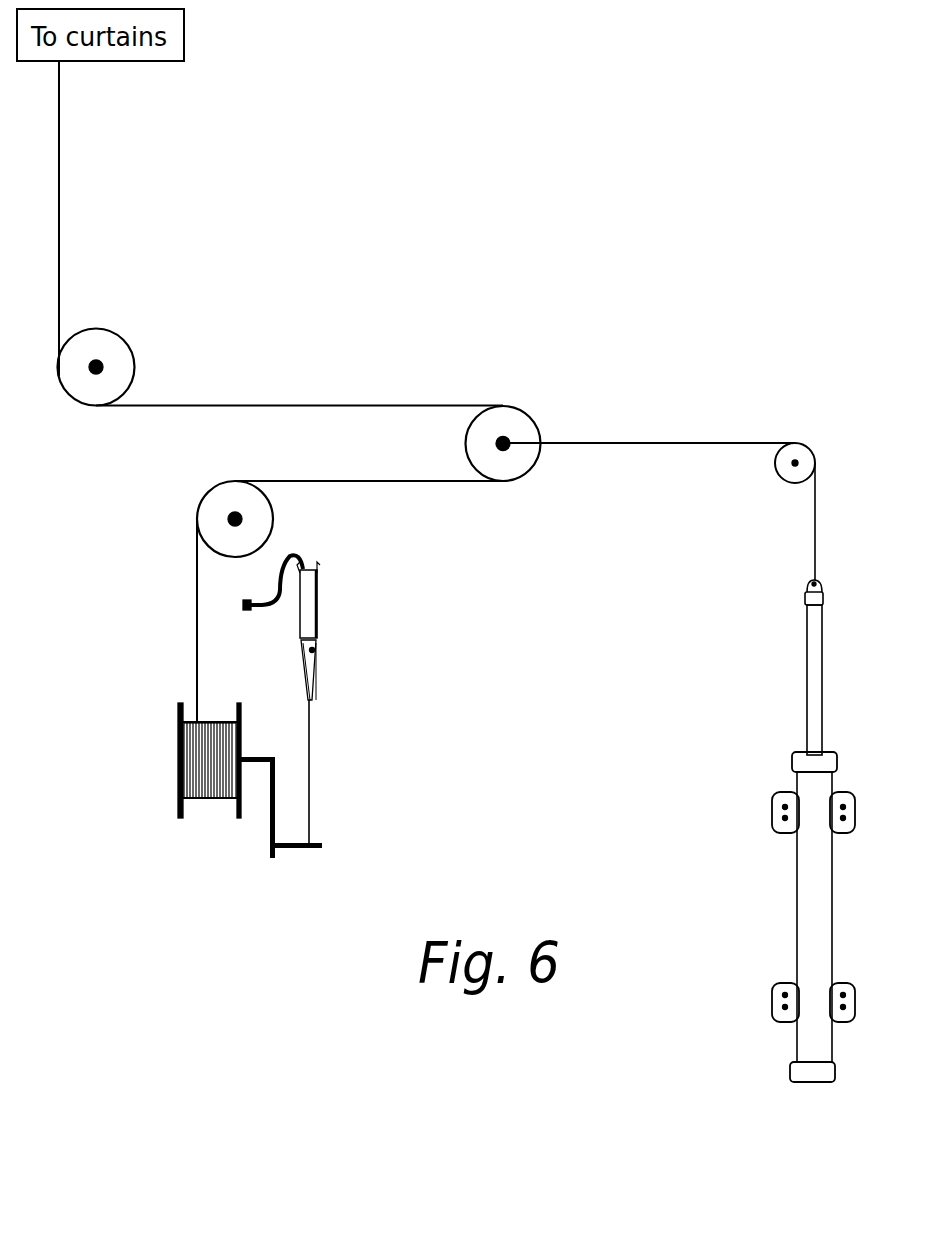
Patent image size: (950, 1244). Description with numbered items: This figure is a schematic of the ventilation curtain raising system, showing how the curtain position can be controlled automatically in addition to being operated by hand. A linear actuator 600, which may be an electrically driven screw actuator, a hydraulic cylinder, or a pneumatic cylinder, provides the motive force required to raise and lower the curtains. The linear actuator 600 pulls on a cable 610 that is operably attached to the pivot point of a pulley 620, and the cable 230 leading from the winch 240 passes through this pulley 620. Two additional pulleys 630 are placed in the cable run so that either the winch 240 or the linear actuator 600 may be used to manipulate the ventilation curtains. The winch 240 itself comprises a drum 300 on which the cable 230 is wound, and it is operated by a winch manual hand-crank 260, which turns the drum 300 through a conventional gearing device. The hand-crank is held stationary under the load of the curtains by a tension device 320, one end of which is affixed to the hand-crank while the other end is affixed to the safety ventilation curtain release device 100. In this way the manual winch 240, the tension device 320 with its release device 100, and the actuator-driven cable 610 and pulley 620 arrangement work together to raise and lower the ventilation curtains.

The safety ventilation curtain release device 100 is at (334, 615).
The cable 230 is at (195, 628).
The winch 240 is at (139, 754).
The winch manual hand-crank 260 is at (267, 817).
The drum 300 is at (203, 802).
The tension device 320 is at (310, 778).
The linear actuator 600 is at (808, 882).
The cable 610 is at (597, 440).
The pulley 620 is at (508, 413).
The additional pulleys 630 is at (82, 388).